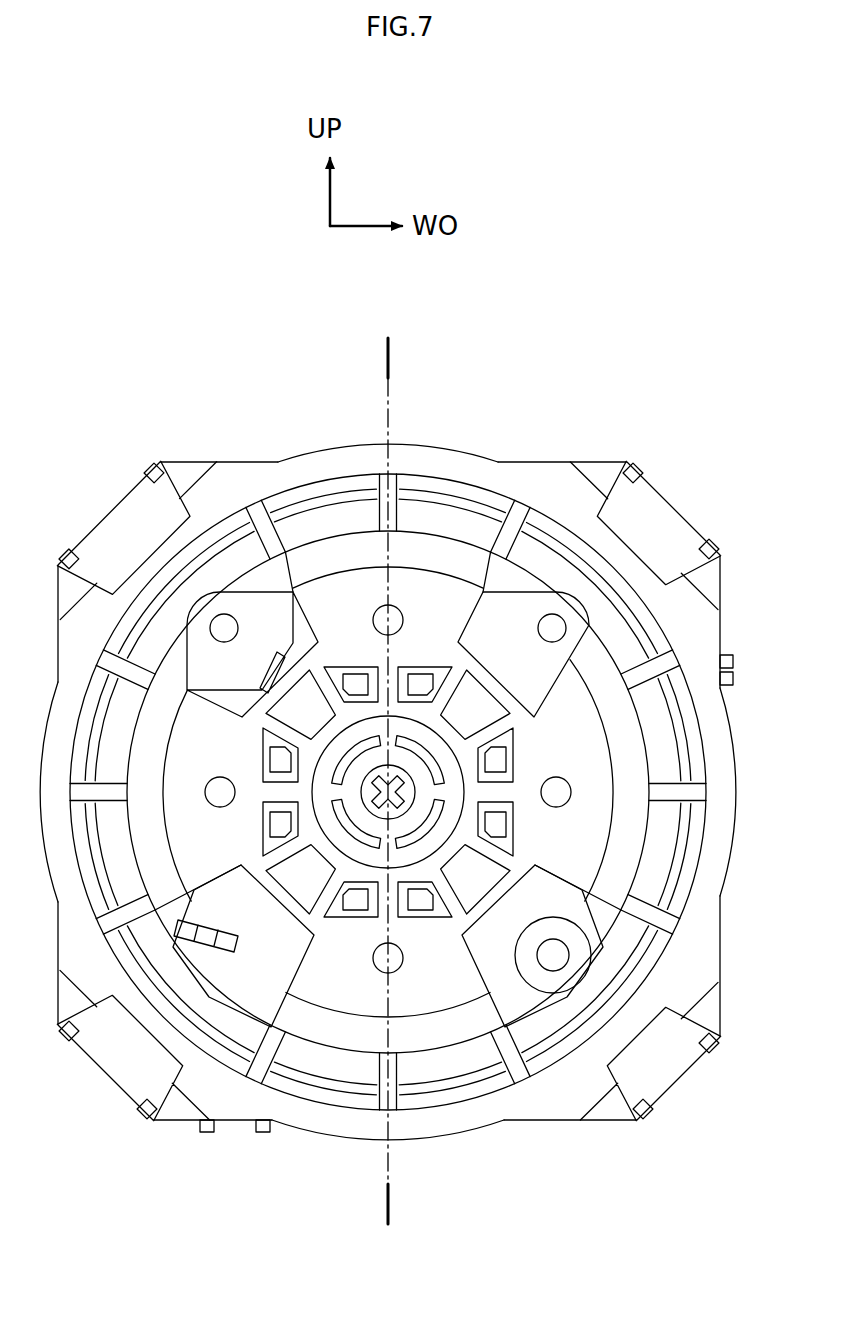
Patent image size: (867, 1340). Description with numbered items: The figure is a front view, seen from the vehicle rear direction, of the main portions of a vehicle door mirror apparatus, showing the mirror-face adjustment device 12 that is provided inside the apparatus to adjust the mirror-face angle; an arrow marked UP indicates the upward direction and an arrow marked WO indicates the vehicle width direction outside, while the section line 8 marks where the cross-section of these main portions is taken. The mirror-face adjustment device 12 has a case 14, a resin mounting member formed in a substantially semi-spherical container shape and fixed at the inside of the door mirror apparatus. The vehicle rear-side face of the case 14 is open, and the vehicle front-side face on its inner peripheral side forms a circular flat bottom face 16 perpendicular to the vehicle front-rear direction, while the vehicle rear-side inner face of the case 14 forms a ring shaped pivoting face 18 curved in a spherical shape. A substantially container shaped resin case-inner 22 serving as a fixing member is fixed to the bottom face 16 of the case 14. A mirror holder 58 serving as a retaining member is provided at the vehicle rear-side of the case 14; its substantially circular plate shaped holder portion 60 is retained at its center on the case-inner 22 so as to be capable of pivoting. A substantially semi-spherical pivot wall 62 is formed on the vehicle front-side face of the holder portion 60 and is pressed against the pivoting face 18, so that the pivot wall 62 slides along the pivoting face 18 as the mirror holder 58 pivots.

The section line 8- 8 is at (396, 353).
The mirror-face adjustment device 12 is at (128, 357).
The case 14 is at (258, 553).
The bottom face 16 is at (531, 543).
The pivoting face 18 is at (330, 515).
The case-inner 22 is at (568, 668).
The mirror holder 58 is at (461, 446).
The holder portion 60 is at (333, 1139).
The pivot wall 62 is at (455, 1100).